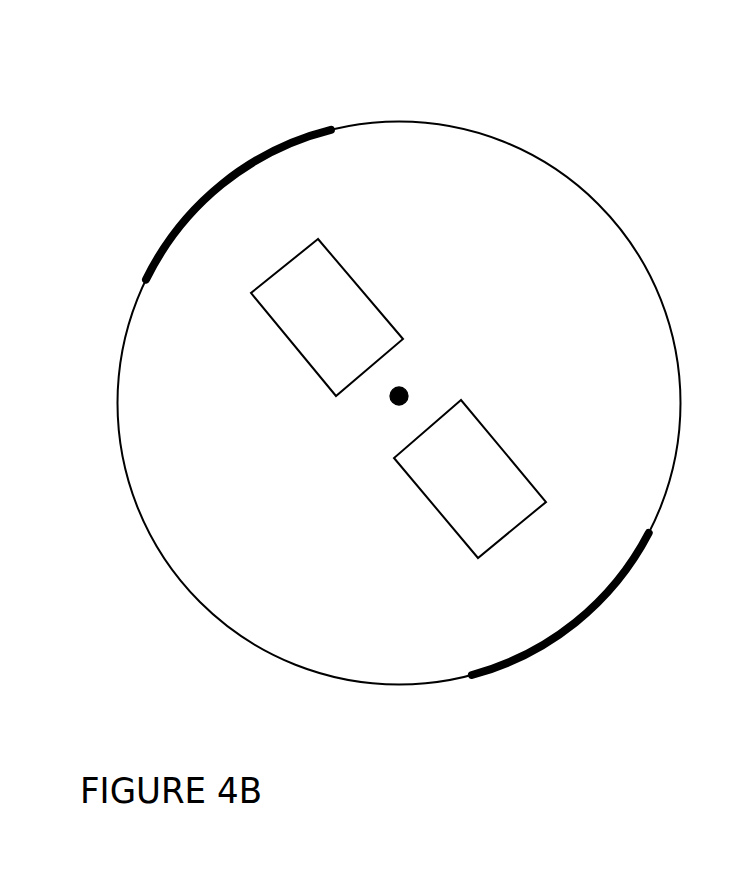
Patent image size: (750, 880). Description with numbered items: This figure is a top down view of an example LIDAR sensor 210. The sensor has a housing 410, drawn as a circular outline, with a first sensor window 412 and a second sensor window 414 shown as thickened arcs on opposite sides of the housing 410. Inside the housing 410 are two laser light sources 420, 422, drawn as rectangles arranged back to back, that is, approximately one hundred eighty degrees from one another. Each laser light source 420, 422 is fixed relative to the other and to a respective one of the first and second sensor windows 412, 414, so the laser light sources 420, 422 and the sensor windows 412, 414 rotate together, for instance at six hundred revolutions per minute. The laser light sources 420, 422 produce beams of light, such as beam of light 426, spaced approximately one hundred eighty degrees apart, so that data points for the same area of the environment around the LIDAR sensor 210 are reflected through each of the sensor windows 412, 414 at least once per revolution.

The LIDAR sensor 210 is at (136, 81).
The housing 410 is at (128, 321).
The first sensor window 412 is at (183, 215).
The second sensor window 414 is at (580, 627).
The laser light source 420 is at (296, 355).
The laser light source 422 is at (546, 502).
The beam of light 426 is at (0, 497).